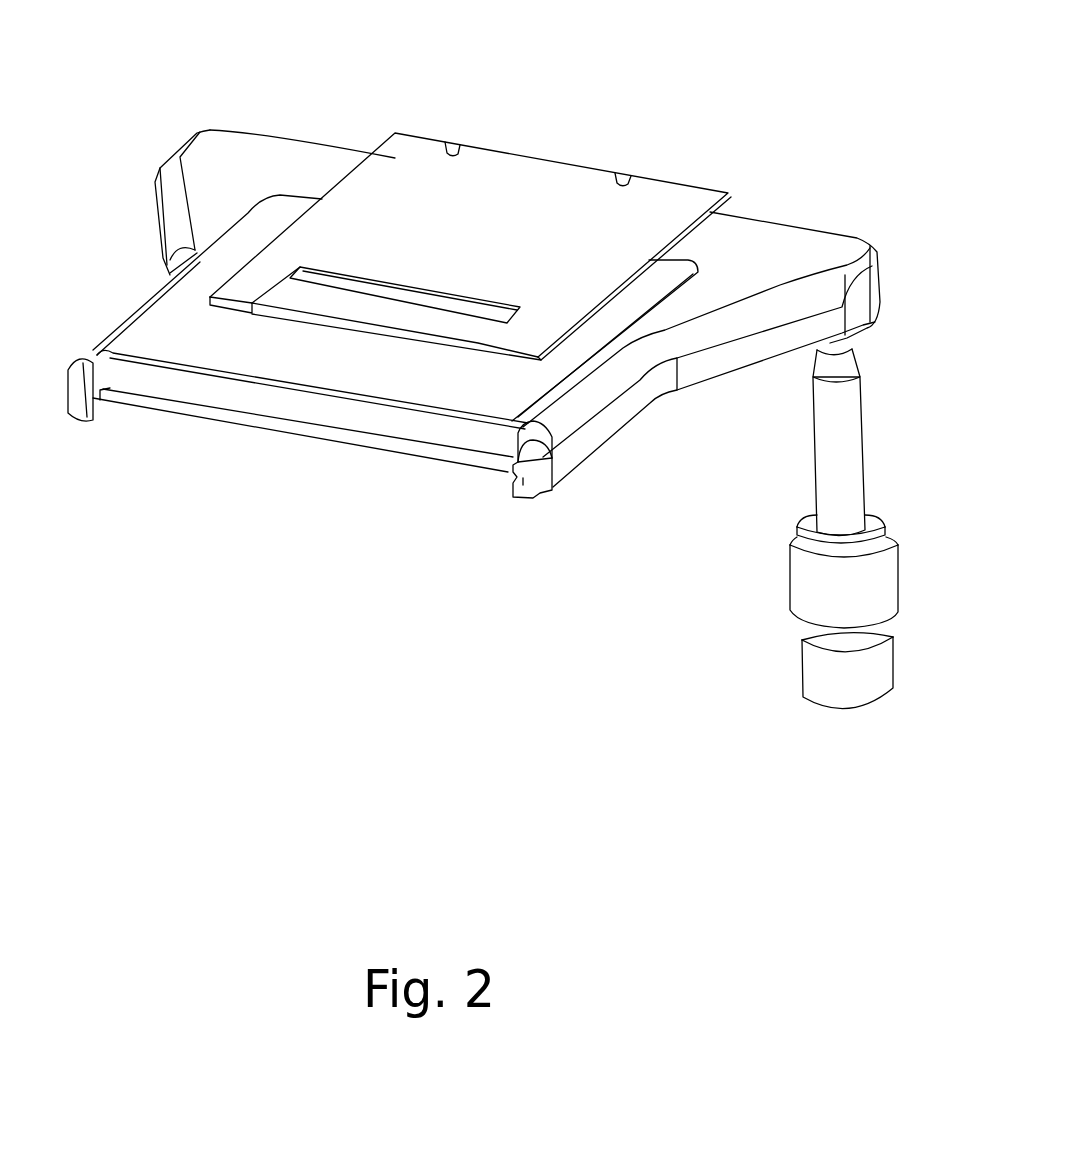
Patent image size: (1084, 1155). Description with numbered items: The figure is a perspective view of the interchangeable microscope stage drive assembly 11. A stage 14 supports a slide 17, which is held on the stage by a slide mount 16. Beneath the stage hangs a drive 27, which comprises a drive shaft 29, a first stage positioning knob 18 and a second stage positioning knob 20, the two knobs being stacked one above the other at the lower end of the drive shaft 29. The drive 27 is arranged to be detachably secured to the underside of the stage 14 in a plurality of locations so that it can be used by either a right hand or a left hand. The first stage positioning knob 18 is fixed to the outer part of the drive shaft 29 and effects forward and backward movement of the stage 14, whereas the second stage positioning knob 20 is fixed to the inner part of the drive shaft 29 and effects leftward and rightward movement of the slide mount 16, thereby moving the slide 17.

The interchangeable microscope stage drive assembly 11 is at (772, 98).
The stage 14 is at (178, 380).
The slide mount 16 is at (473, 238).
The slide 17 is at (347, 302).
The first stage positioning knob 18 is at (817, 582).
The second stage positioning knob 20 is at (832, 672).
The drive 27 is at (882, 442).
The drive shaft 29 is at (833, 427).